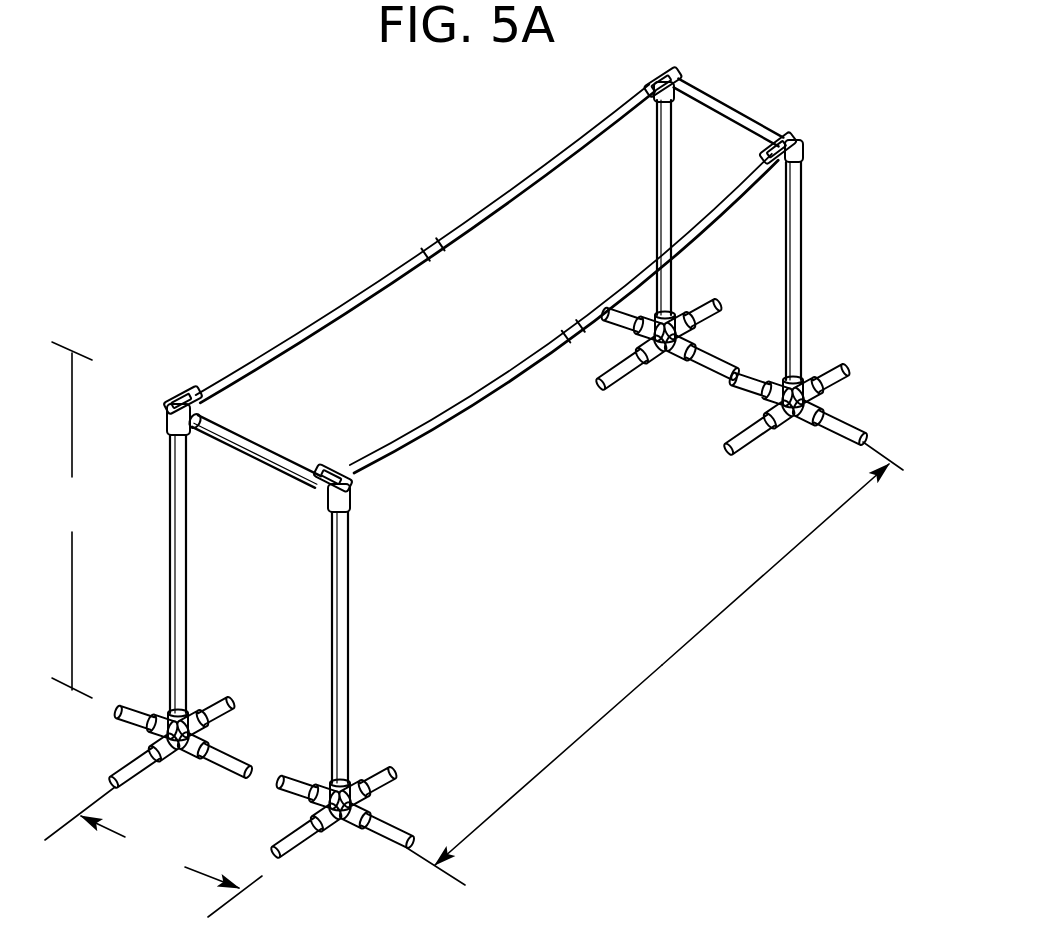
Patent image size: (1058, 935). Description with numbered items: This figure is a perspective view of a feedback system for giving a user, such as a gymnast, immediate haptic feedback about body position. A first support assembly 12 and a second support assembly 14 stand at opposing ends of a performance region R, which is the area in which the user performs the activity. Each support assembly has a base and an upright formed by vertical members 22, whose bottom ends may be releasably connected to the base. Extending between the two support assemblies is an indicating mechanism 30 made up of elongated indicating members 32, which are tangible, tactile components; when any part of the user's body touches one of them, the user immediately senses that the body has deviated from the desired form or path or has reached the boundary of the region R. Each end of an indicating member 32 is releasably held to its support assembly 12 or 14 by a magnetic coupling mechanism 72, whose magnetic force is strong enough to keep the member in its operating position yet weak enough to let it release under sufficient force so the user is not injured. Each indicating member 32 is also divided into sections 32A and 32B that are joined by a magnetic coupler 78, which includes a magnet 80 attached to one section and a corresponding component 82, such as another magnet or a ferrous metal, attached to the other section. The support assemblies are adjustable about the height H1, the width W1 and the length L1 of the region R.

The first support assembly 12 is at (157, 578).
The second support assembly 14 is at (818, 235).
The vertical member 22 is at (184, 537).
The indicating mechanism 30 is at (485, 283).
The elongated indicating member 32 is at (485, 283).
The section of indicating member 32A is at (360, 302).
The section of indicating member 32B is at (588, 131).
The magnetic coupling mechanism 72 is at (651, 71).
The magnetic coupler 78 is at (482, 171).
The magnet 80 is at (426, 249).
The corresponding component 82 is at (580, 320).
The region R is at (579, 439).
The height H1 is at (72, 520).
The width W1 is at (153, 852).
The length L1 is at (655, 663).